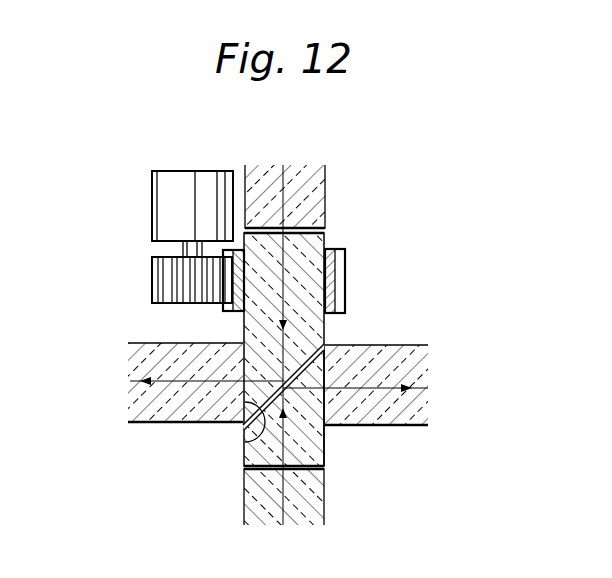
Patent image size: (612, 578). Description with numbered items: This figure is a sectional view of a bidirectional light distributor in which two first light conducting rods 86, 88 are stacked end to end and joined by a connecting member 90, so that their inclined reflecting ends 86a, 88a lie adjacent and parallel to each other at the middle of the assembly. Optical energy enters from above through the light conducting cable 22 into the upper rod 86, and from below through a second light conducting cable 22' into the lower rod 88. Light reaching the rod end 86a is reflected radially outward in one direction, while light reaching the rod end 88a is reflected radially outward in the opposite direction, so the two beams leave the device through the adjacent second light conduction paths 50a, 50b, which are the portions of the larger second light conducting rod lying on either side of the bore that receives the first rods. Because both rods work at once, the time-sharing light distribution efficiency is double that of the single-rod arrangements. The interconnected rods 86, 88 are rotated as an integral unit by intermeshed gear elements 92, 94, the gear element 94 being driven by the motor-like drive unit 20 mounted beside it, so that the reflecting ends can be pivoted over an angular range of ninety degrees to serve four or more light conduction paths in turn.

The motor 20 is at (153, 204).
The light conducting cable 22 is at (313, 196).
The second light conducting cable 22' is at (315, 505).
The portion of second light conducting rod 50a is at (170, 426).
The portion of second light conducting rod 50b is at (399, 416).
The first light conducting rod 86 is at (327, 324).
The inclined reflecting end 86a is at (300, 356).
The first light conducting rod 88 is at (326, 449).
The inclined reflecting end 88a is at (243, 451).
The connecting member 90 is at (284, 389).
The gear element 92 is at (346, 267).
The gear element 94 is at (153, 277).